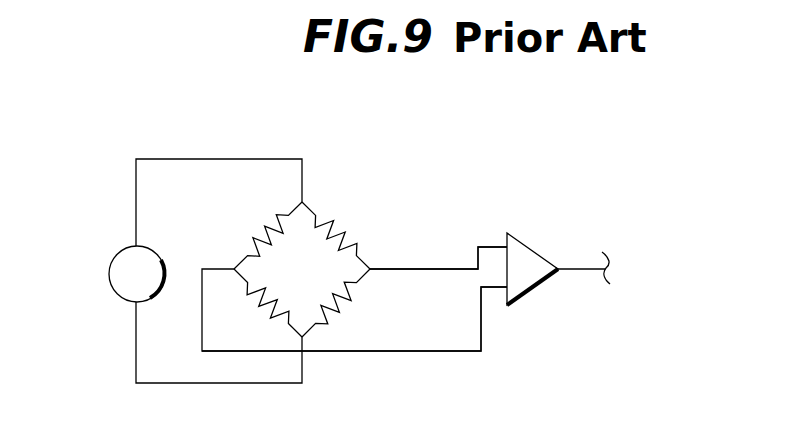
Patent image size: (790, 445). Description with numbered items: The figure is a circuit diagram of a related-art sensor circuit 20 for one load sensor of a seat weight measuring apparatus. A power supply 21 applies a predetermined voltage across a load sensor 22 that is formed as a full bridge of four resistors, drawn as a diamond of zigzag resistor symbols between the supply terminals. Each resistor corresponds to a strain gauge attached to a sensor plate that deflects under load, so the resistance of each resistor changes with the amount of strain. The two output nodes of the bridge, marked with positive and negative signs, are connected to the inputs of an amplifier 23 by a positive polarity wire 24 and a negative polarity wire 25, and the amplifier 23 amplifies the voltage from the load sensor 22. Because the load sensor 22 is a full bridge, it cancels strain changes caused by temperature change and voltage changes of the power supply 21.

The sensor circuit 20 is at (440, 146).
The power supply 21 is at (112, 258).
The load sensor 22 is at (317, 213).
The amplifier 23 is at (524, 236).
The positive polarity wire 24 is at (413, 268).
The negative polarity wire 25 is at (413, 351).